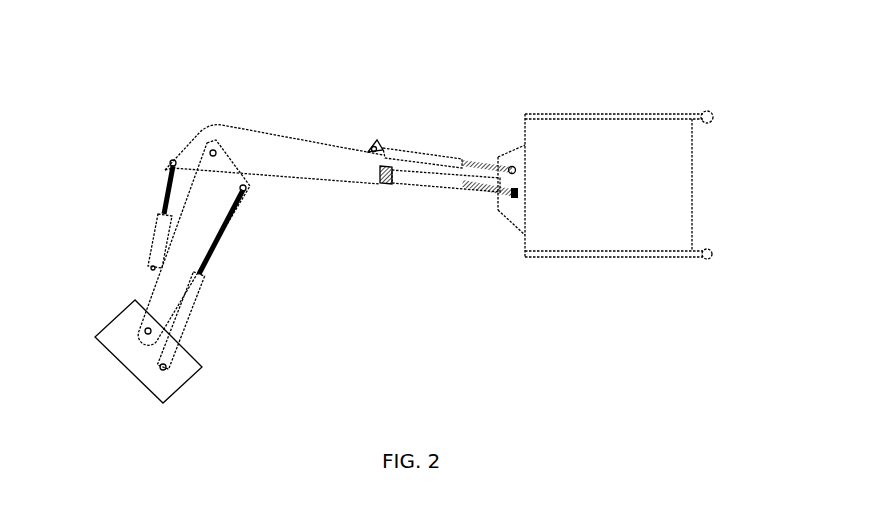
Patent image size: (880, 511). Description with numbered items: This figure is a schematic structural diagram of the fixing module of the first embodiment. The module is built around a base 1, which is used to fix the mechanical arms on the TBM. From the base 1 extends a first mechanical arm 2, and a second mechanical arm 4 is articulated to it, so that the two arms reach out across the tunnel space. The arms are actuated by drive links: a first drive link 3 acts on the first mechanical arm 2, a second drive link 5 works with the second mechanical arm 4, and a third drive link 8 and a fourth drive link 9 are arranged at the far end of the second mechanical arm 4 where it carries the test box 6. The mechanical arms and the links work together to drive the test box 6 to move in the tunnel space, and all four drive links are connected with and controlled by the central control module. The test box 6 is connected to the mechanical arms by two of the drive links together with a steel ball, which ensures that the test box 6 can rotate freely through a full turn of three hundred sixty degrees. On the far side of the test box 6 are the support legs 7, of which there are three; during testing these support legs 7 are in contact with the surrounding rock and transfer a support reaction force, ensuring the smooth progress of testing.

The base 1 is at (108, 337).
The first mechanical arm 2 is at (153, 303).
The first drive link 3 is at (163, 200).
The second mechanical arm 4 is at (292, 162).
The second drive link 5 is at (435, 190).
The test box 6 is at (552, 142).
The support leg 7 is at (702, 113).
The third drive link 8 is at (438, 193).
The fourth drive link 9 is at (197, 293).